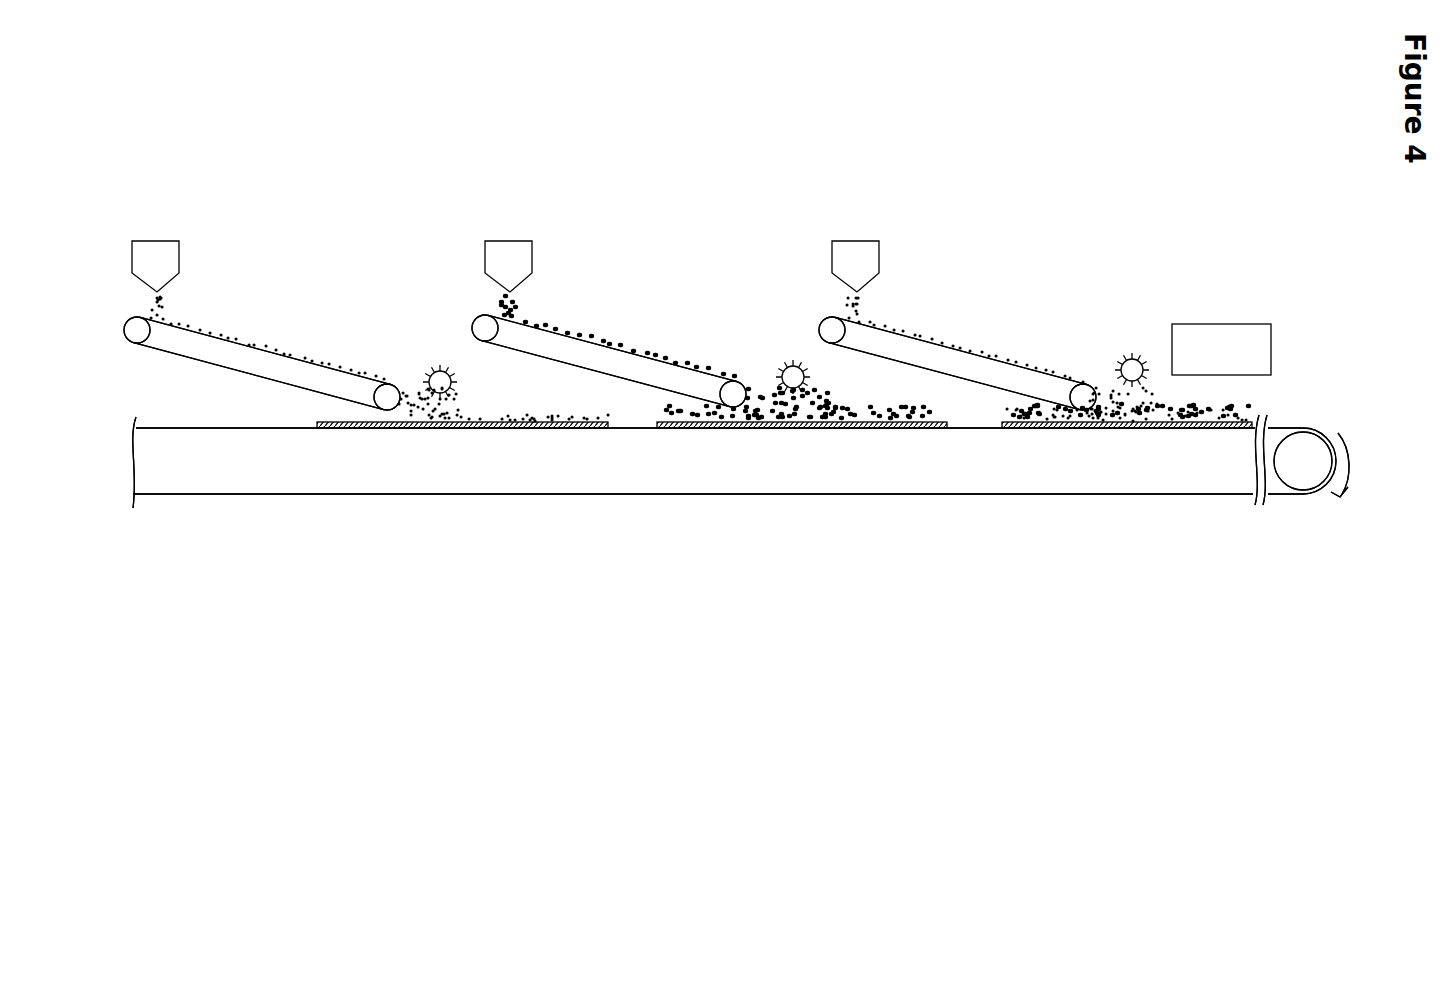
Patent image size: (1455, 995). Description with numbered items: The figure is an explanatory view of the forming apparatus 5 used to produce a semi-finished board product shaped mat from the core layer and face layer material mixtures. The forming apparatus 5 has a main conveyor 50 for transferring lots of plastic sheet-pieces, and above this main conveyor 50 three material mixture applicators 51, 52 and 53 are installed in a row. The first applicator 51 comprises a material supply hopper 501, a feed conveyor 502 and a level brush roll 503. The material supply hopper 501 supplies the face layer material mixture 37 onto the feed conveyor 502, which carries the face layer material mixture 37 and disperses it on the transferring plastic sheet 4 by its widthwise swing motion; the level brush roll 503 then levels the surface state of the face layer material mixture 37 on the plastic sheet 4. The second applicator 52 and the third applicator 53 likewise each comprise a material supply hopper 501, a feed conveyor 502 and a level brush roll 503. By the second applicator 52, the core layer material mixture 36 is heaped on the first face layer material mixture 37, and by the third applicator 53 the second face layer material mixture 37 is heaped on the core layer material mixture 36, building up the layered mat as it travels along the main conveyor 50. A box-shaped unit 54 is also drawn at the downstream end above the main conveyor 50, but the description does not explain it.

The plastic sheet 4 is at (382, 428).
The forming apparatus 5 is at (681, 582).
The core layer material mixture 36 is at (578, 330).
The face layer material mixture 37 is at (217, 330).
The main conveyor 50 is at (247, 428).
The first applicator 51 is at (291, 277).
The second applicator 52 is at (652, 277).
The third applicator 53 is at (986, 287).
The heating unit 54 is at (1222, 335).
The material supply hopper 501 is at (157, 252).
The feed conveyor 502 is at (337, 377).
The level brush roll 503 is at (440, 365).